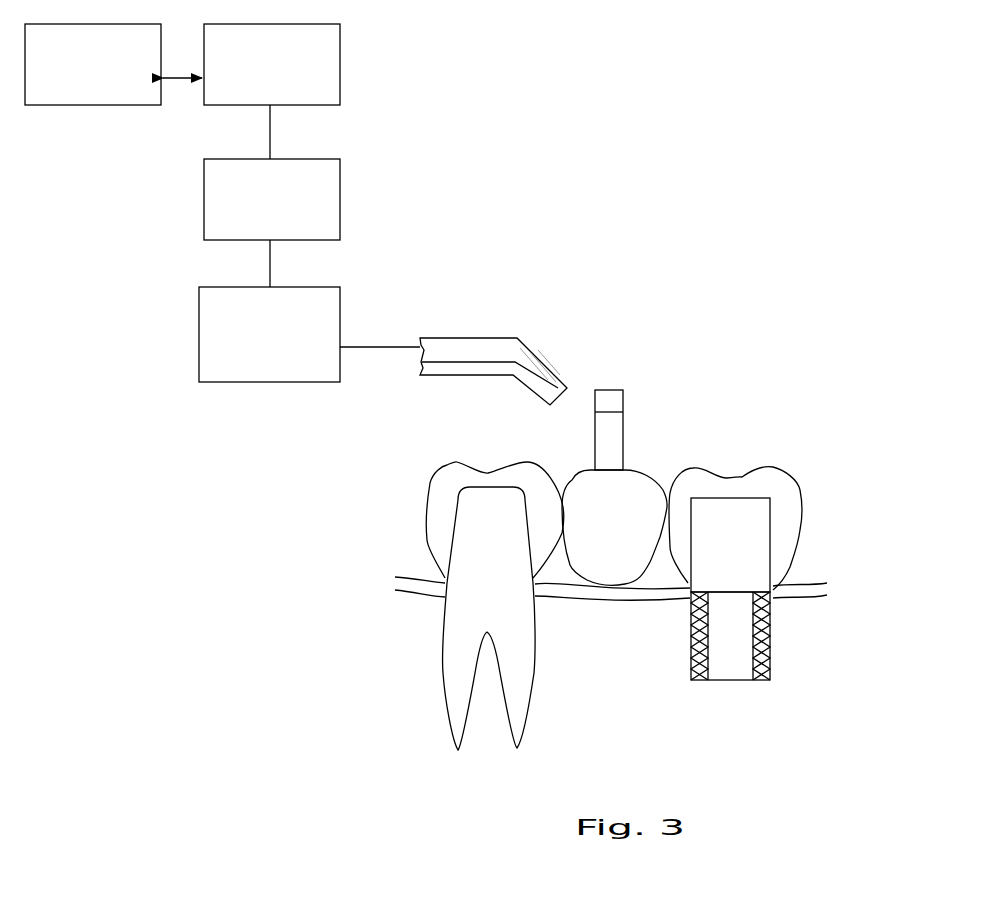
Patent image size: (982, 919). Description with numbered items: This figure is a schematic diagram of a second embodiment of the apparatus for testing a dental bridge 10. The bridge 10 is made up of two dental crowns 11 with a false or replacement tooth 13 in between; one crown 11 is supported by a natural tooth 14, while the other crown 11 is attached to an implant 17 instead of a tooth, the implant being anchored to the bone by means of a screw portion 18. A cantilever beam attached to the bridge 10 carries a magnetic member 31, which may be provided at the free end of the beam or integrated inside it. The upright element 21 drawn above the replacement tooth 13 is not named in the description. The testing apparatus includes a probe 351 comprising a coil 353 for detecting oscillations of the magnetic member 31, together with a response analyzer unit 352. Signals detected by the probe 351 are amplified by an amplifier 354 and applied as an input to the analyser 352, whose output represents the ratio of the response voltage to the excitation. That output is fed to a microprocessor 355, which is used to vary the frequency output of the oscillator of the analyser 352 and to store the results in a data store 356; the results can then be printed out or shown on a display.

The data store 356 is at (93, 64).
The microprocessor 355 is at (251, 91).
The response analyzer unit 352 is at (272, 223).
The amplifier 354 is at (309, 334).
The probe 351 is at (461, 338).
The coil 353 is at (540, 355).
The dental instrument / probe 21 is at (606, 390).
The magnetic member 31 is at (632, 431).
The dental bridge 10 is at (418, 447).
The dental crowns 11 is at (436, 468).
The replacement tooth 13 is at (613, 568).
The natural tooth 14 is at (445, 683).
The implant 17 is at (752, 573).
The screw portion 18 is at (760, 675).